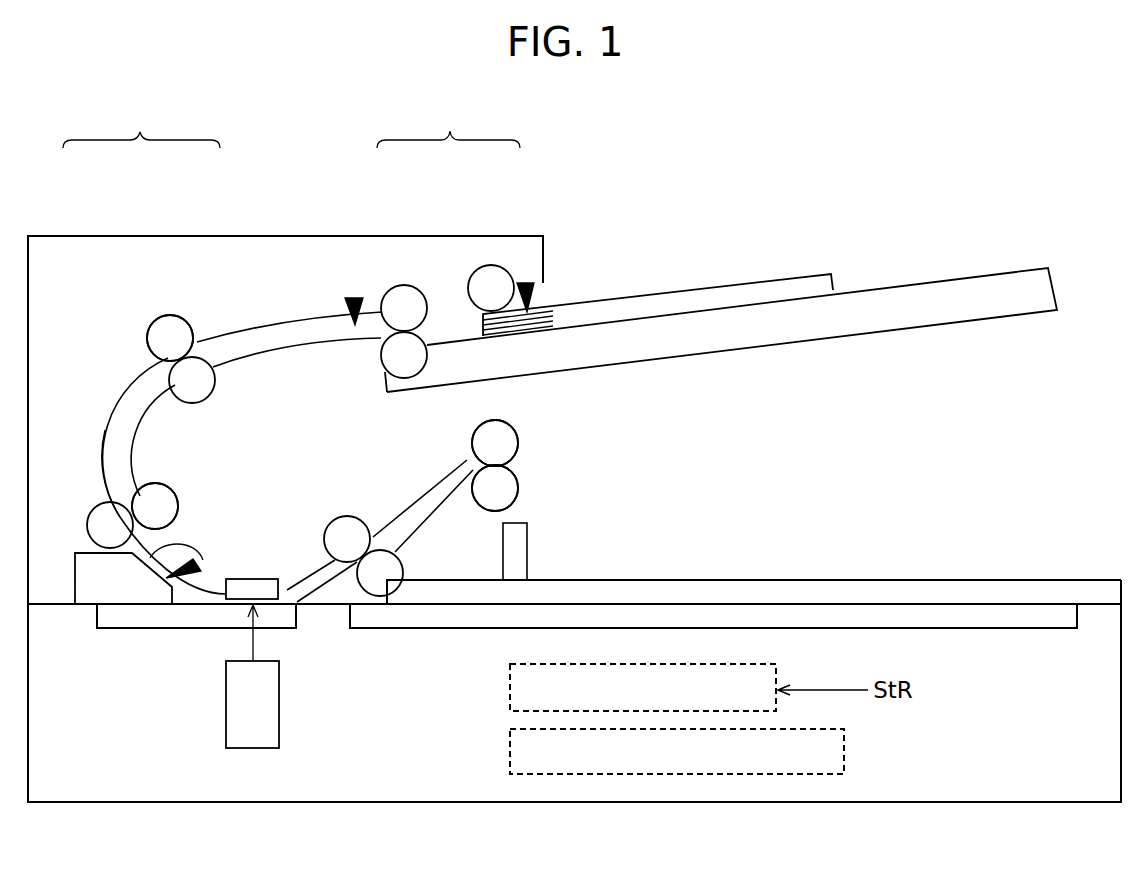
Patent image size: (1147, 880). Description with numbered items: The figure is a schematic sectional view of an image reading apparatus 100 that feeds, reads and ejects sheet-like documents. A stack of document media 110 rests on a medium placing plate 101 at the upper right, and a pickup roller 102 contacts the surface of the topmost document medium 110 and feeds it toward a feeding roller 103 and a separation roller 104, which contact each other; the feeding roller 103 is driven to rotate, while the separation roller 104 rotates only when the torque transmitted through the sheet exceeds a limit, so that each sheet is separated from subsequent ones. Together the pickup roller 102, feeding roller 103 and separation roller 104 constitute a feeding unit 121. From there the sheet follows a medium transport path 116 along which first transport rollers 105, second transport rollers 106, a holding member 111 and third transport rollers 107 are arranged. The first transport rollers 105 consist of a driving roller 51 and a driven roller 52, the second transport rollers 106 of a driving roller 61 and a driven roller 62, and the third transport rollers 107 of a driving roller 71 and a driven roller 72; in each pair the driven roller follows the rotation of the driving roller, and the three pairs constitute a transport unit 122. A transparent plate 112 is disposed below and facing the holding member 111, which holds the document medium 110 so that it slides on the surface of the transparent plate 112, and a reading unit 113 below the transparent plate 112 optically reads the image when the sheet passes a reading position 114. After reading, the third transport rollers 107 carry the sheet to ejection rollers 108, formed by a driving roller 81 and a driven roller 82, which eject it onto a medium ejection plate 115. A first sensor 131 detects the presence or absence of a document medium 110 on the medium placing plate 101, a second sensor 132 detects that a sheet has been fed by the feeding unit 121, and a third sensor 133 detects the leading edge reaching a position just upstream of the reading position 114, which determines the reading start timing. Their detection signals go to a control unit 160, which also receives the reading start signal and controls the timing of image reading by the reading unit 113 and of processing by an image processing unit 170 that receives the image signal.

The image reading apparatus 100 is at (765, 127).
The medium placing plate 101 is at (952, 280).
The document medium 110 is at (756, 284).
The pickup roller 102 is at (493, 265).
The feeding roller 103 is at (403, 285).
The separation roller 104 is at (426, 339).
The first transport rollers 105 is at (158, 303).
The second transport rollers 106 is at (158, 470).
The third transport rollers 107 is at (318, 484).
The ejection rollers 108 is at (532, 449).
The holding member 111 is at (253, 578).
The transparent plate 112 is at (175, 630).
The reading unit 113 is at (250, 750).
The reading position 114 is at (256, 604).
The medium ejection plate 115 is at (872, 580).
The medium transport path 116 is at (107, 438).
The feeding unit 121 is at (448, 125).
The transport unit 122 is at (141, 125).
The first sensor 131 is at (532, 292).
The second sensor 132 is at (352, 298).
The third sensor 133 is at (146, 566).
The driving roller 51 is at (177, 314).
The driven roller 52 is at (214, 388).
The driving roller 61 is at (92, 506).
The driven roller 62 is at (176, 494).
The driving roller 71 is at (356, 516).
The driven roller 72 is at (403, 560).
The driving roller 81 is at (512, 422).
The driven roller 82 is at (520, 487).
The control unit 160 is at (745, 664).
The image processing unit 170 is at (845, 755).